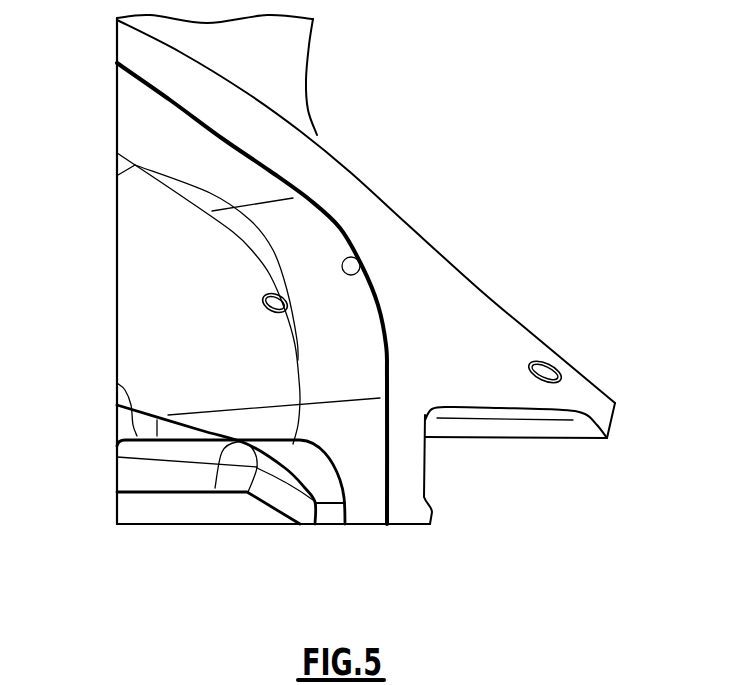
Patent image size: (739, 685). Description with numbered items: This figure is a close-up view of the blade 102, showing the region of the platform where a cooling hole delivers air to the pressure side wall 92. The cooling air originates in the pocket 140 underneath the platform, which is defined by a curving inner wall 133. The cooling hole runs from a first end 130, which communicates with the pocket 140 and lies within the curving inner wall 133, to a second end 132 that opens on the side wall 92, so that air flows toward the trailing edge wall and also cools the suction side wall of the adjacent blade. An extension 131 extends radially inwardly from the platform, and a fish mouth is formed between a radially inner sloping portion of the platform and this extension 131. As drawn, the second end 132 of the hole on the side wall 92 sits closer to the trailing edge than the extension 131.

The blade 102 is at (366, 127).
The pressure side wall 92 is at (456, 332).
The first end 130 is at (267, 296).
The extension 131 is at (408, 492).
The second end 132 is at (558, 362).
The curving inner wall 133 is at (362, 258).
The pocket 140 is at (182, 332).